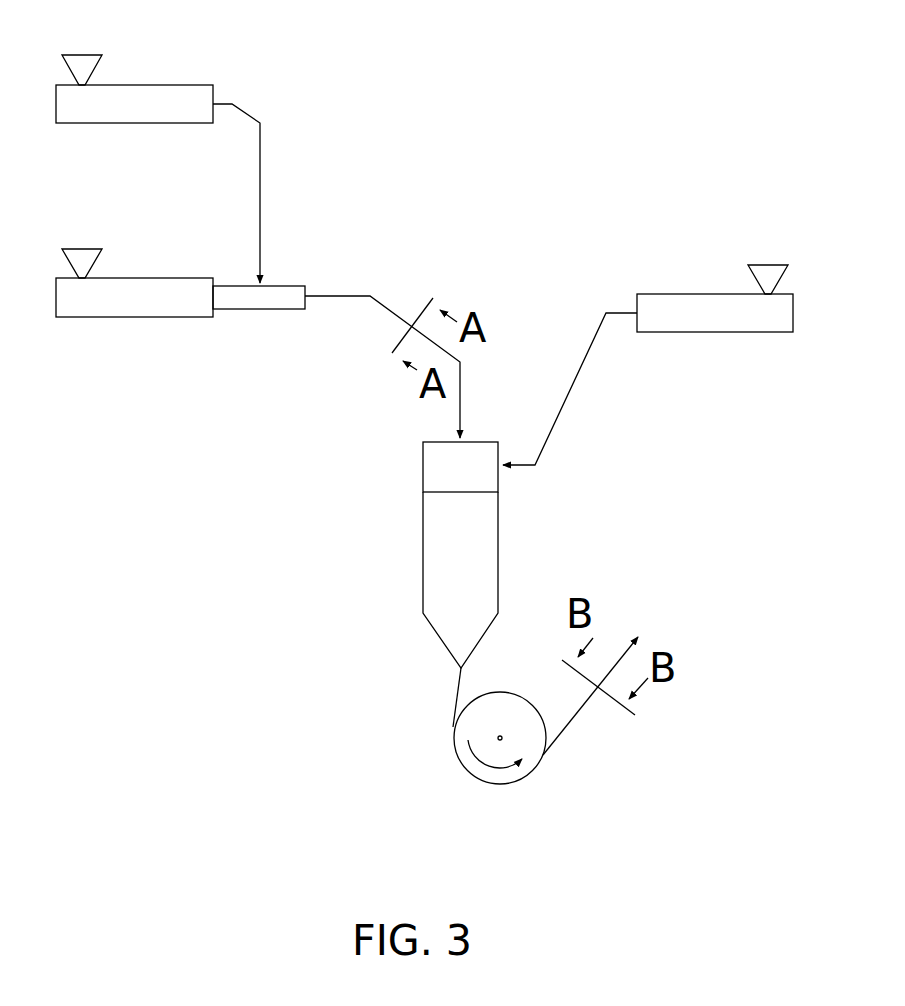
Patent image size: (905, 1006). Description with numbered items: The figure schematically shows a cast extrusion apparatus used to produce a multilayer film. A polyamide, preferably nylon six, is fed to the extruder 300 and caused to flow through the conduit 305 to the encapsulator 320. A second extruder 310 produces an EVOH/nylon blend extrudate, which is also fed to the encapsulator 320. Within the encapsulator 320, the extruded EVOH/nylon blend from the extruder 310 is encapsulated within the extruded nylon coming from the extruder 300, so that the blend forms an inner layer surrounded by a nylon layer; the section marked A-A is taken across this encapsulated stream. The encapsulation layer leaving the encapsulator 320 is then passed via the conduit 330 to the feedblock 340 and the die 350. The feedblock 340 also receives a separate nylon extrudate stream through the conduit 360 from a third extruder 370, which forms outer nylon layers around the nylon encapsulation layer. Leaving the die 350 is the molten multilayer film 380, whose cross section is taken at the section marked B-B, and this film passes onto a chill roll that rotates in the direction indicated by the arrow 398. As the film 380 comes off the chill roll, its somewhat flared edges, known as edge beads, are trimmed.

The extruder 300 is at (168, 95).
The conduit 305 is at (260, 197).
The extruder 310 is at (160, 298).
The encapsulator 320 is at (253, 297).
The conduit 330 is at (382, 330).
The feedblock 340 is at (440, 473).
The die 350 is at (440, 572).
The conduit 360 is at (558, 413).
The extruder 370 is at (715, 318).
The molten multilayer film 380 is at (562, 735).
The arrow 398 is at (497, 768).